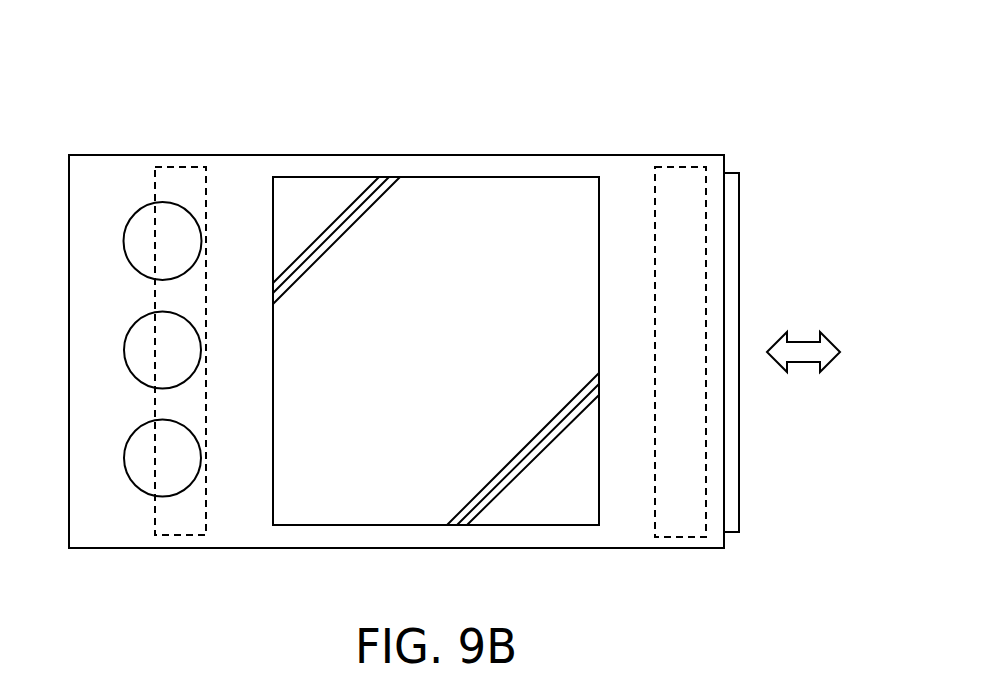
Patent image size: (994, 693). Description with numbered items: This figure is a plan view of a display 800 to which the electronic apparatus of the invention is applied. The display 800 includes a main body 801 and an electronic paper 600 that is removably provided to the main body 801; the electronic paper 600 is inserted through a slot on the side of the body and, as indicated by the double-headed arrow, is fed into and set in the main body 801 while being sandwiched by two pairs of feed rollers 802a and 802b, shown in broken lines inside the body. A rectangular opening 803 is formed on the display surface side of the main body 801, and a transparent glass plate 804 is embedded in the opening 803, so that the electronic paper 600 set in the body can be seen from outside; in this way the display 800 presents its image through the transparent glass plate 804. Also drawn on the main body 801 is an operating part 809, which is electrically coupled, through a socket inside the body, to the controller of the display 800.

The display 800 is at (610, 85).
The main body 801 is at (245, 173).
The feed rollers 802a is at (180, 166).
The feed rollers 802b is at (680, 166).
The rectangular opening 803 is at (331, 179).
The transparent glass plate 804 is at (452, 190).
The operating part 809 is at (138, 208).
The electronic paper 600 is at (740, 222).